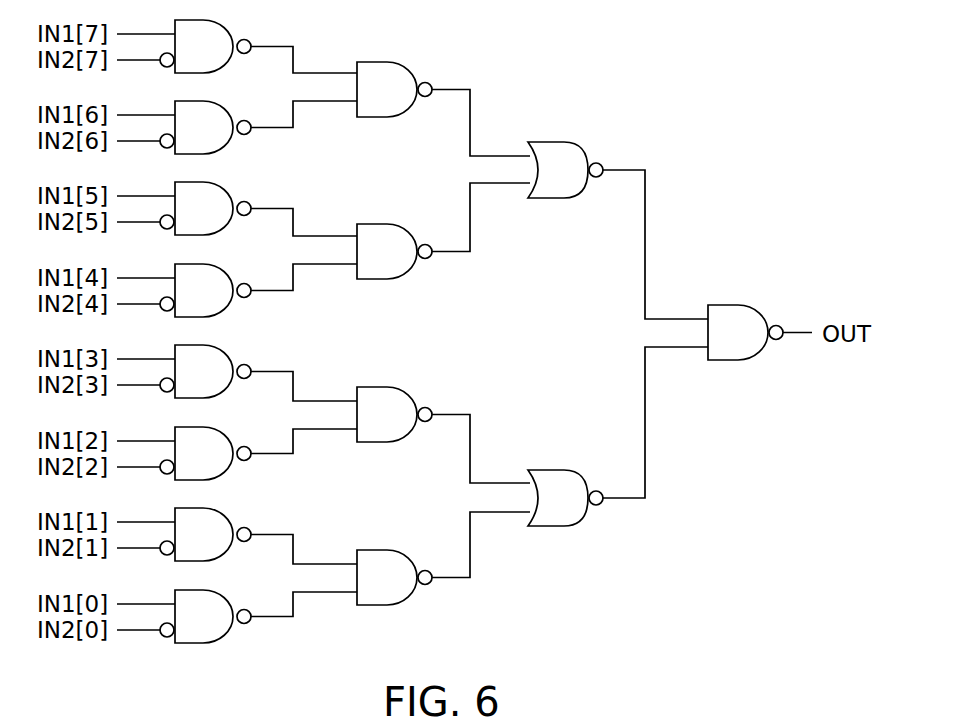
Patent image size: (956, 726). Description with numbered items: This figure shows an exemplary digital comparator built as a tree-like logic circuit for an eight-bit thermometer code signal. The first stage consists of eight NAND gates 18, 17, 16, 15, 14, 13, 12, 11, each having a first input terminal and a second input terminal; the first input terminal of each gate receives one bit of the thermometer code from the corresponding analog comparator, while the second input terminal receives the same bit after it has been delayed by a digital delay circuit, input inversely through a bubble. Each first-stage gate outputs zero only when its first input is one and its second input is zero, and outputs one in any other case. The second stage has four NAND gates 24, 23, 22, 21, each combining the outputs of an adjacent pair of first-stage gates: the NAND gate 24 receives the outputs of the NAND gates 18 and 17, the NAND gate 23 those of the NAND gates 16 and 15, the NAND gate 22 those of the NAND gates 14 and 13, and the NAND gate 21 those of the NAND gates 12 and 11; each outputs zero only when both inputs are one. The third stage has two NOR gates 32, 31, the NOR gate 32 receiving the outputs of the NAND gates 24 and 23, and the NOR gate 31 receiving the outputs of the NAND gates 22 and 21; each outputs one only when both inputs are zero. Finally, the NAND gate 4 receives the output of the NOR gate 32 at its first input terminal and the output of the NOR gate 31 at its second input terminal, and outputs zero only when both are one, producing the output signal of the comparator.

The NAND gate L18 18 is at (213, 46).
The NAND gate L17 17 is at (213, 127).
The NAND gate L16 16 is at (213, 208).
The NAND gate L15 15 is at (213, 290).
The NAND gate L14 14 is at (213, 371).
The NAND gate L13 13 is at (213, 453).
The NAND gate L12 12 is at (213, 534).
The NAND gate L11 11 is at (213, 616).
The NAND gate L24 24 is at (394, 89).
The NAND gate L23 23 is at (394, 251).
The NAND gate L22 22 is at (394, 414).
The NAND gate L21 21 is at (394, 577).
The NOR gate L32 32 is at (565, 170).
The NOR gate L31 31 is at (565, 498).
The NAND gate L4 4 is at (745, 332).